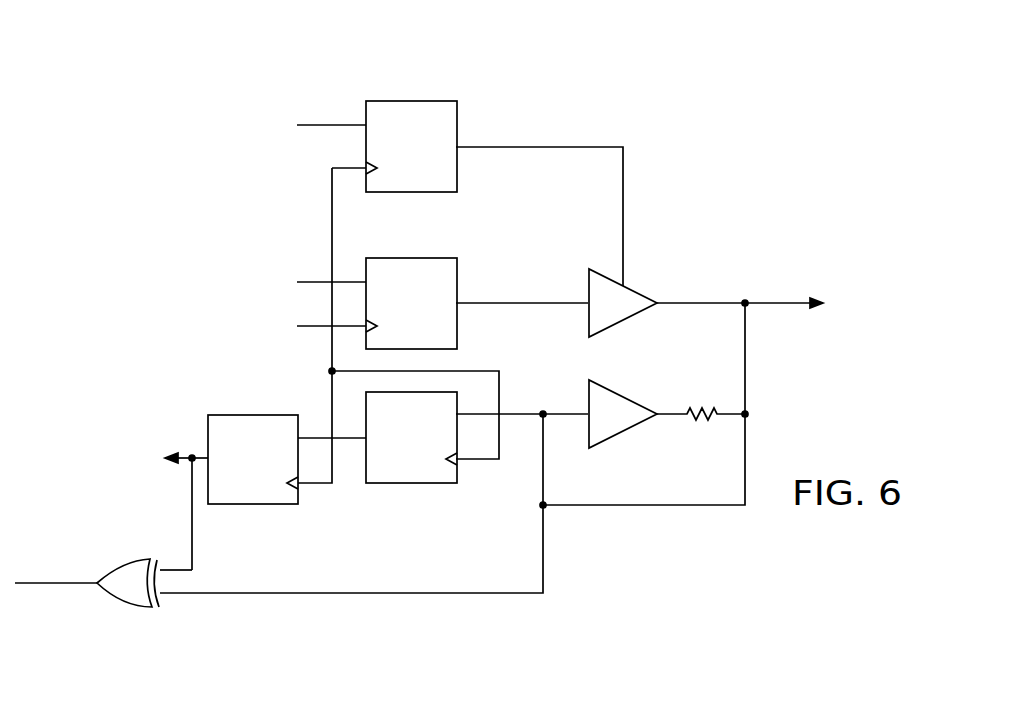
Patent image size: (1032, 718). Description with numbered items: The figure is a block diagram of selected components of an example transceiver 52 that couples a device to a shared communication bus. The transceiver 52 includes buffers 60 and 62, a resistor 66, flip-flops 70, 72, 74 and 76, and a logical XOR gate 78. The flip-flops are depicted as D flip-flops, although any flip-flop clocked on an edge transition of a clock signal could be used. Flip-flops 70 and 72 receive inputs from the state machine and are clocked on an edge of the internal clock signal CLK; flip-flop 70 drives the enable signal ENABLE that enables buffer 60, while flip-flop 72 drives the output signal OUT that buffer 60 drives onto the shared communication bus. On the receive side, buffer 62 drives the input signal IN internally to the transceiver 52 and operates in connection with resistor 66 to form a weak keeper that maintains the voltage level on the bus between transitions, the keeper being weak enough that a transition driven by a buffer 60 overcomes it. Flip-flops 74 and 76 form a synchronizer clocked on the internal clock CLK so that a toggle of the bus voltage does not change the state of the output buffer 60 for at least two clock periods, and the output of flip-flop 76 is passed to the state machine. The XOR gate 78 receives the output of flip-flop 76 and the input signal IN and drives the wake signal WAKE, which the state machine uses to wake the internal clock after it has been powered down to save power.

The transceiver 52 is at (608, 82).
The flip-flop 70 is at (410, 101).
The flip-flop 72 is at (410, 258).
The flip-flop 74 is at (410, 483).
The flip-flop 76 is at (253, 504).
The buffer 60 is at (634, 322).
The buffer 62 is at (628, 433).
The resistor 66 is at (704, 405).
The logical XOR gate 78 is at (137, 607).